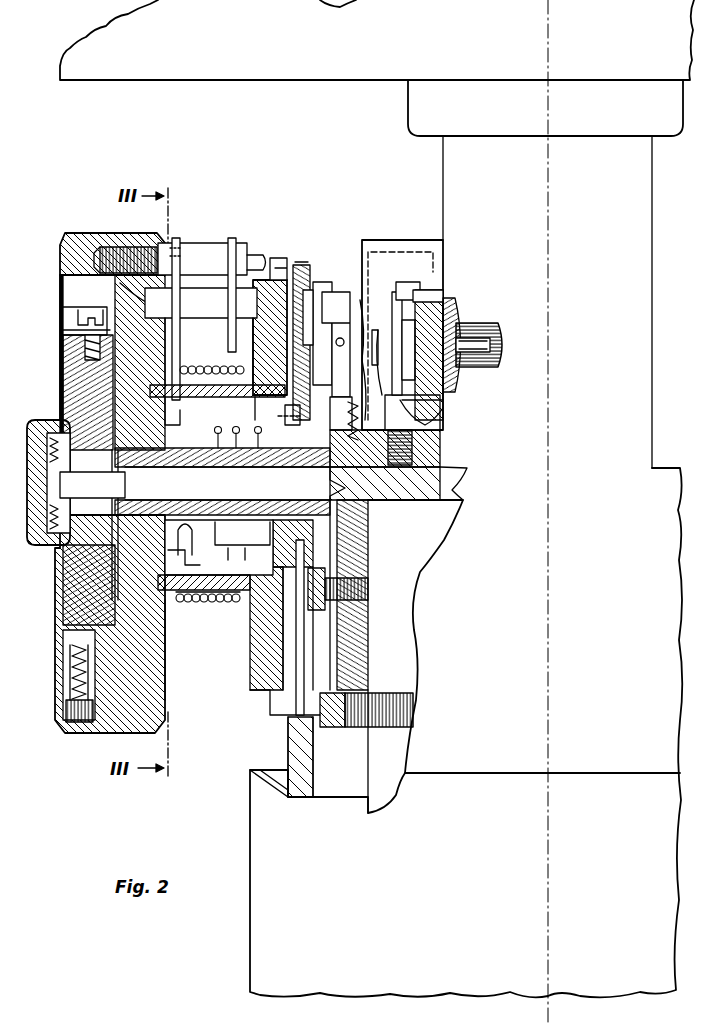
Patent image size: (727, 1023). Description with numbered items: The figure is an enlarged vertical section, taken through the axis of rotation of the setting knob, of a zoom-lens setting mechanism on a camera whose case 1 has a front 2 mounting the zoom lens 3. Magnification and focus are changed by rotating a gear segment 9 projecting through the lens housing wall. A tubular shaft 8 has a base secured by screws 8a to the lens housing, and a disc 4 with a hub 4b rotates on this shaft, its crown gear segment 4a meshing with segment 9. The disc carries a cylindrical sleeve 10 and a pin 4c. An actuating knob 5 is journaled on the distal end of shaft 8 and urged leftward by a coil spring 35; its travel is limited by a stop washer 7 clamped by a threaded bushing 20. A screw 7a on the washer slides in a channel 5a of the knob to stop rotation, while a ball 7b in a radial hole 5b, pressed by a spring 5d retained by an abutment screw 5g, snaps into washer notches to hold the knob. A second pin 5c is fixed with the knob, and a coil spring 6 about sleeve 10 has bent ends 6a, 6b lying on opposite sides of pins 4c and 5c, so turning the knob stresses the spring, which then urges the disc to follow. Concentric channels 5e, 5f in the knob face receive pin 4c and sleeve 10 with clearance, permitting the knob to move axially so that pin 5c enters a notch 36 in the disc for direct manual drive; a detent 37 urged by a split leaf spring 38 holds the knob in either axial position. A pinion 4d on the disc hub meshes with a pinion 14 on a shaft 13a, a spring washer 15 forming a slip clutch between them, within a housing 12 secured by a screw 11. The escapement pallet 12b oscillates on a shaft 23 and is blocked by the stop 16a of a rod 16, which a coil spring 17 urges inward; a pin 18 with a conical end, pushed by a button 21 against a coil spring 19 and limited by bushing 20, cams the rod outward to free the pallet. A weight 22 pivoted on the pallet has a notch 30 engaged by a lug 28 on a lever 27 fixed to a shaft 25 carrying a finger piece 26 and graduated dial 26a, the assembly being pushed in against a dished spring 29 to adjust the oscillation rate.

The camera case 1 is at (148, 70).
The camera front 2 is at (350, 82).
The zoom lens 3 is at (656, 497).
The disc 4 is at (248, 705).
The crown gear segment 4a is at (315, 703).
The hub 4b is at (200, 527).
The pin 4c is at (205, 310).
The pinion 4d is at (302, 593).
The actuating knob 5 is at (147, 683).
The channel 5a is at (72, 317).
The radial hole 5b is at (72, 662).
The pin 5c is at (200, 262).
The spring 5d is at (70, 685).
The concentric channel 5e is at (147, 302).
The concentric channel 5f is at (165, 642).
The abutment screw 5g is at (72, 715).
The coil spring 6 is at (202, 376).
The spring end 6a is at (178, 238).
The spring end 6b is at (233, 238).
The stop washer 7 is at (85, 380).
The screw 7a is at (88, 327).
The ball 7b is at (72, 634).
The tubular shaft 8 is at (327, 543).
The screws 8a is at (368, 586).
The gear segment 9 is at (405, 712).
The cylindrical sleeve 10 is at (188, 600).
The screw 11 is at (412, 500).
The housing 12 is at (396, 262).
The pallet 12b is at (410, 368).
The shaft 13a is at (345, 262).
The pinion 14 is at (298, 268).
The spring washer 15 is at (311, 284).
The rod 16 is at (278, 422).
The stop 16a is at (385, 262).
The coil spring 17 is at (378, 500).
The pin 18 is at (75, 592).
The coil spring 19 is at (50, 435).
The bushing 20 is at (90, 425).
The button 21 is at (38, 488).
The weight 22 is at (448, 420).
The shaft 23 is at (372, 235).
The shaft 25 is at (490, 352).
The finger piece 26 is at (478, 330).
The graduated dial 26a is at (455, 375).
The lever 27 is at (415, 370).
The lug 28 is at (405, 300).
The dished spring 29 is at (448, 302).
The notch 30 is at (410, 282).
The coil spring 35 is at (240, 428).
The notch 36 is at (280, 258).
The detent 37 is at (205, 602).
The leaf spring 38 is at (200, 612).